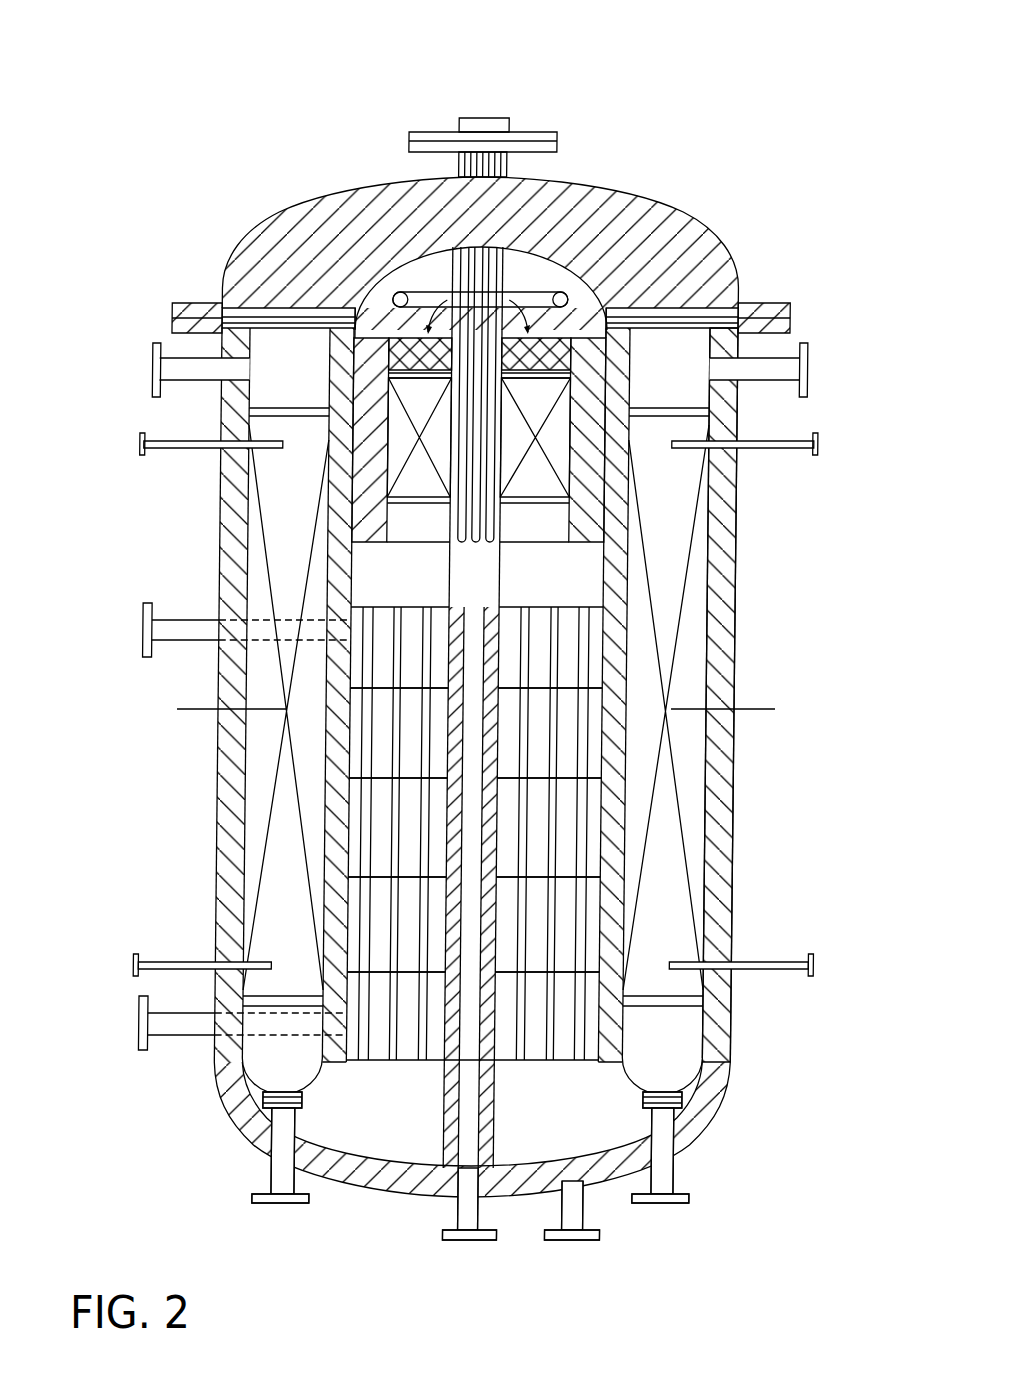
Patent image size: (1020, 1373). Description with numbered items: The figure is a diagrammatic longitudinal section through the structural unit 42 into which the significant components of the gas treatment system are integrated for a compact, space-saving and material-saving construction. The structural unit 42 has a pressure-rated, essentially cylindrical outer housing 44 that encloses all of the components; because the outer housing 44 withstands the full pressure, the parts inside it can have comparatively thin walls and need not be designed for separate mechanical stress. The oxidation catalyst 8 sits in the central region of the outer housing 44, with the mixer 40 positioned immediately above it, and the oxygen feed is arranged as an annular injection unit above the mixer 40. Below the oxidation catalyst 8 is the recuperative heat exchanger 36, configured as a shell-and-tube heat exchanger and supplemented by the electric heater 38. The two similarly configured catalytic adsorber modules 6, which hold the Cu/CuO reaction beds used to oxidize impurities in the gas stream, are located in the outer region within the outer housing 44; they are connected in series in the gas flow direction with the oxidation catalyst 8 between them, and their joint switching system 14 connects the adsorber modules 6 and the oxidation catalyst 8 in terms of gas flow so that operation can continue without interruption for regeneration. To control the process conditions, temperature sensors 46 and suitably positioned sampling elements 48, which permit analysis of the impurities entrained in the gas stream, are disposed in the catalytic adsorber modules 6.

The structural unit 42 is at (323, 62).
The switching system 14 is at (538, 297).
The mixer 40 is at (400, 348).
The oxidation catalyst 8 is at (419, 487).
The outer housing 44 is at (725, 598).
The temperature sensors 46 is at (280, 712).
The catalytic adsorber module 6 is at (245, 836).
The recuperative heat exchanger 36 is at (544, 927).
The electric heater 38 is at (598, 830).
The sampling elements 48 is at (140, 445).